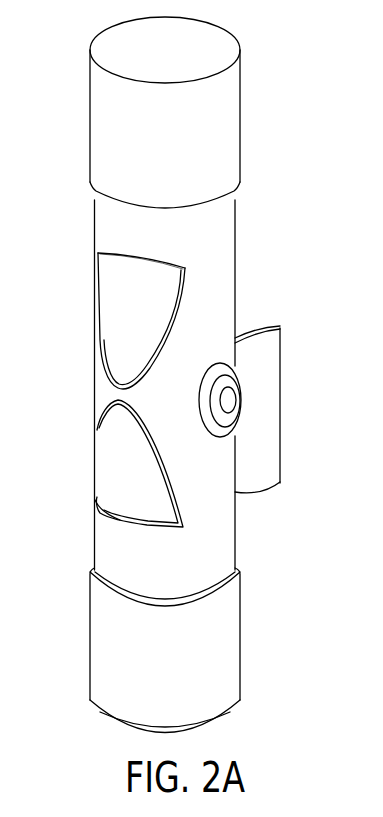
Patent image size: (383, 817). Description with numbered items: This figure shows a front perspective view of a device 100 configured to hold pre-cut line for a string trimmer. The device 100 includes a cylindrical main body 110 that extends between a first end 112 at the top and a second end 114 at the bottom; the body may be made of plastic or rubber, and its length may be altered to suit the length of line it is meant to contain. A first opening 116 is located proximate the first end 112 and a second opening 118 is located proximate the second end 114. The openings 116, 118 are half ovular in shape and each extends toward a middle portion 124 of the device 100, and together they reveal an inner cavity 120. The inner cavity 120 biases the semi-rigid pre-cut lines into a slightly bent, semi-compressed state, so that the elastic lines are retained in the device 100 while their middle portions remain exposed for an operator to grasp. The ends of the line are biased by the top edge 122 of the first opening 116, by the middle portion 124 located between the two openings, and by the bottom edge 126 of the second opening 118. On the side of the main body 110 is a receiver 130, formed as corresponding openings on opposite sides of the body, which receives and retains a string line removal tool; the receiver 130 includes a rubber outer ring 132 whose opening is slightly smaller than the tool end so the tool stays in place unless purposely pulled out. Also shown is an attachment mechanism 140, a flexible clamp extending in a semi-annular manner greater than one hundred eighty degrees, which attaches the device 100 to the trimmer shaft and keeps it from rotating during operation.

The device 100 is at (55, 158).
The main body 110 is at (225, 222).
The first end 112 is at (110, 42).
The second end 114 is at (207, 720).
The first opening 116 is at (112, 283).
The second opening 118 is at (112, 477).
The inner cavity 120 is at (110, 350).
The top edge 122 is at (152, 266).
The middle portion 124 is at (135, 402).
The bottom edge 126 is at (112, 518).
The receiver 130 is at (236, 400).
The rubber outer ring 132 is at (228, 418).
The attachment mechanism 140 is at (268, 350).